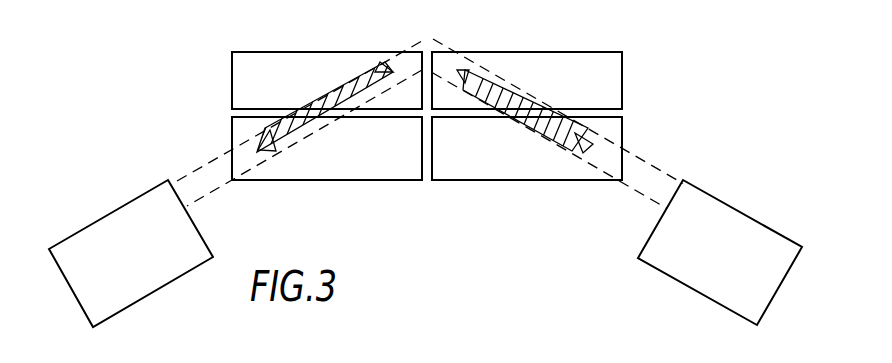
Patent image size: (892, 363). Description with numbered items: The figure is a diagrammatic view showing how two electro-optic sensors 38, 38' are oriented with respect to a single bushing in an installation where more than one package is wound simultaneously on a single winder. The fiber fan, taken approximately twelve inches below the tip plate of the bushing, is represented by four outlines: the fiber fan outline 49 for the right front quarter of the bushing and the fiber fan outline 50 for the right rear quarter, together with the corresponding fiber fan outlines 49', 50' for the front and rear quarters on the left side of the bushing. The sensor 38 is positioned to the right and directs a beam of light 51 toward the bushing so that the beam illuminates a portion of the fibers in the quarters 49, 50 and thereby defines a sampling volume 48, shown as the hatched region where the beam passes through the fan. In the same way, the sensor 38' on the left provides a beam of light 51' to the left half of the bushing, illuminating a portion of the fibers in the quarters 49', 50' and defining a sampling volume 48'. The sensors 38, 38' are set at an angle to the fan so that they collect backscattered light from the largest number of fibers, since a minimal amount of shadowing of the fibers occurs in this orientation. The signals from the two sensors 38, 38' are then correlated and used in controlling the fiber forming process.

The electro-optic sensor 38 is at (720, 247).
The electro-optic sensor 38' is at (131, 250).
The sampling volume 48 is at (524, 90).
The sampling volume 48' is at (322, 90).
The fiber fan outline 49 is at (557, 139).
The fiber fan outline 49' is at (294, 141).
The fiber fan outline 50 is at (556, 72).
The fiber fan outline 50' is at (300, 69).
The beam of light 51 is at (571, 124).
The beam of light 51' is at (283, 124).